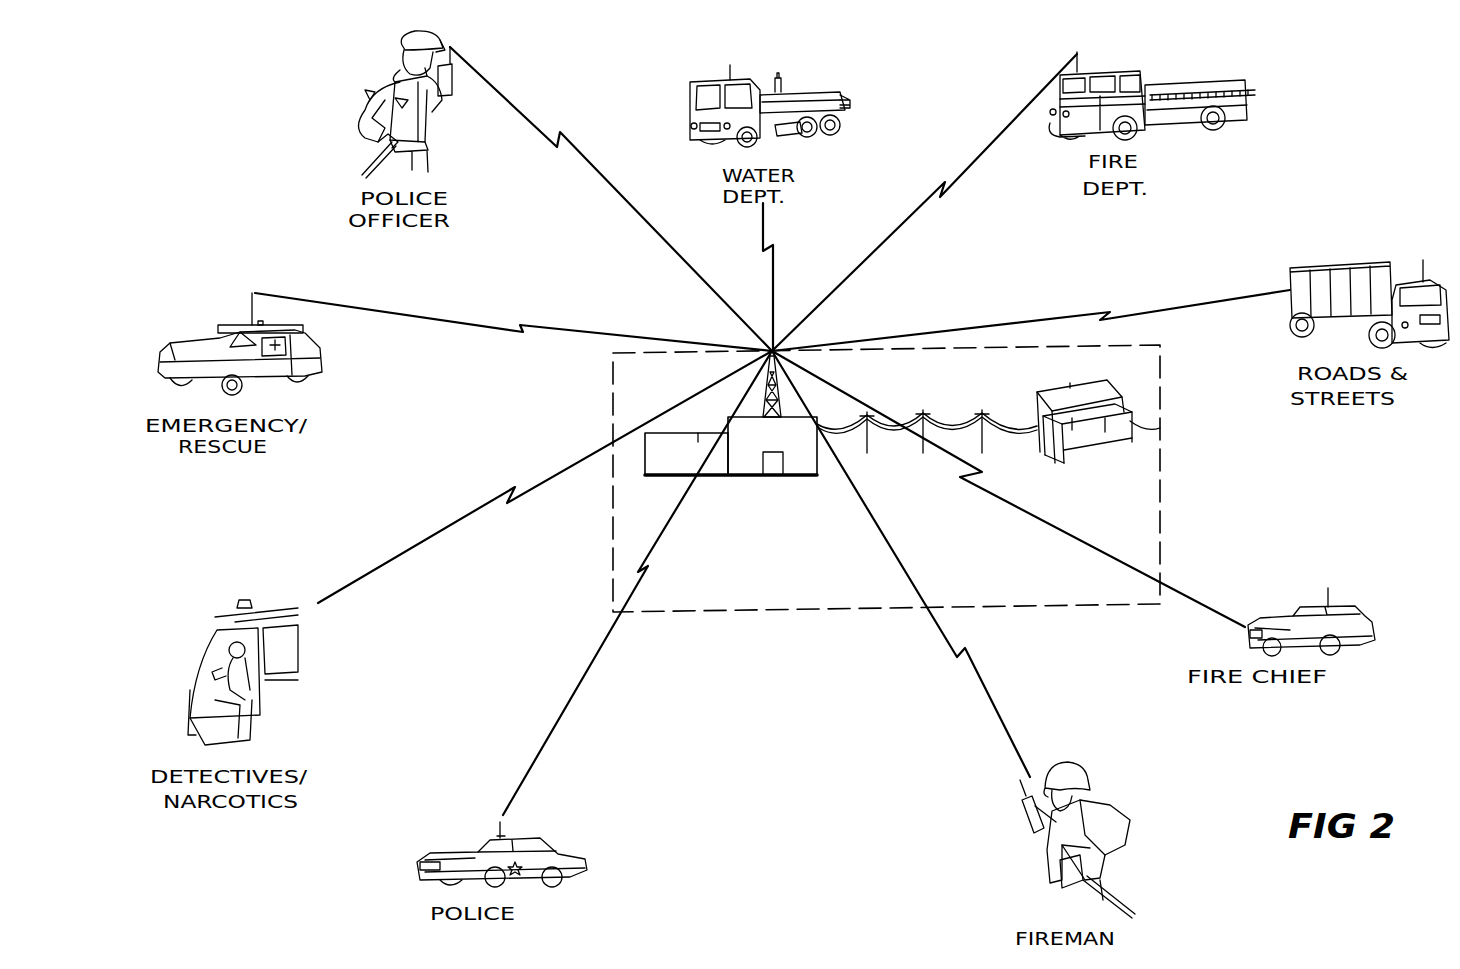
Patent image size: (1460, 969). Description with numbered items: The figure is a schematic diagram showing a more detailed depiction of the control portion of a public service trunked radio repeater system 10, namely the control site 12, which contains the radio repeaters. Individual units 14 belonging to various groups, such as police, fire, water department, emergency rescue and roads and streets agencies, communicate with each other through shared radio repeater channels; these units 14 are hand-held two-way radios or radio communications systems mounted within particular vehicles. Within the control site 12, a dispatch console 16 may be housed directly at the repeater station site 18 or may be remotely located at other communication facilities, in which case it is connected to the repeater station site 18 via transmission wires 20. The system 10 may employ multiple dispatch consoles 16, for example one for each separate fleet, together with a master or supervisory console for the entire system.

The system 10 is at (1258, 187).
The control site 12 is at (706, 612).
The individual units 14 is at (453, 70).
The dispatch console 16 is at (1160, 428).
The repeater station site 18 is at (643, 463).
The transmission wires 20 is at (955, 412).